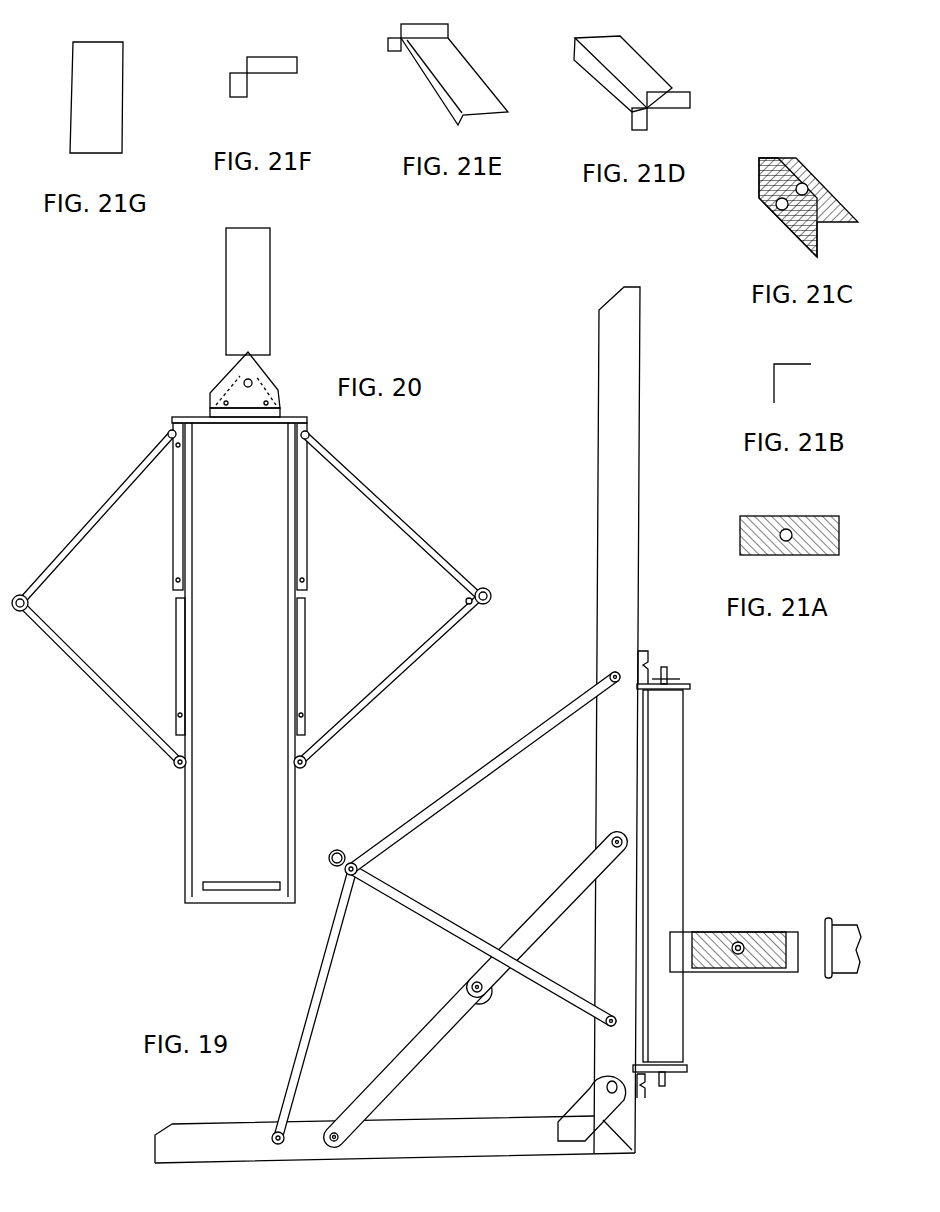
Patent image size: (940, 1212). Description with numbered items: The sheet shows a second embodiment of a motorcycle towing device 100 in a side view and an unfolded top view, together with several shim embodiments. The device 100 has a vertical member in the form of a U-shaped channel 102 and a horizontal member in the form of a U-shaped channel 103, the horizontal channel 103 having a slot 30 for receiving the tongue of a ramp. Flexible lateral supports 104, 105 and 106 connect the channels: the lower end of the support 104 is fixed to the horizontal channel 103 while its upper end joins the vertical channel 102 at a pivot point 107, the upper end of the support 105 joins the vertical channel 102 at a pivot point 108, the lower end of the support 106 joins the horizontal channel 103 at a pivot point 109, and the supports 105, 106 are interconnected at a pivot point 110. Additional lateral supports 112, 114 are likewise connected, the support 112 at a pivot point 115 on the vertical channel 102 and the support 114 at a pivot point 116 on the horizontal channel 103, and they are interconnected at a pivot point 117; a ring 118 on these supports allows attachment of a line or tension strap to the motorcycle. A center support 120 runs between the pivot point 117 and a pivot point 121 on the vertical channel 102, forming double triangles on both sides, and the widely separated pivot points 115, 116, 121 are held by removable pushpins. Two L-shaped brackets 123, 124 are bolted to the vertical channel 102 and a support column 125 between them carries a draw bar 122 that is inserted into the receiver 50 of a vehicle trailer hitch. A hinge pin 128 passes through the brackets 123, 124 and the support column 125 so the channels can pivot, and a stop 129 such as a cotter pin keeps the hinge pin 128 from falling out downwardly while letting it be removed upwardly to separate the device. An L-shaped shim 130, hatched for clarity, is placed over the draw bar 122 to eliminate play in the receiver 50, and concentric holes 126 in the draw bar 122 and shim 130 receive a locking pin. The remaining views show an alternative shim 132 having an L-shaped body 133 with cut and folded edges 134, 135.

In FIG. 20, the slot 30 is at (210, 913).
In FIG. 19, the receiver 50 is at (847, 967).
In FIG. 19, the motorcycle towing device 100 is at (563, 528).
In FIG. 20, the vertical channel 102 is at (192, 420).
In FIG. 19, the vertical channel 102 is at (628, 498).
In FIG. 20, the horizontal channel 103 is at (207, 840).
In FIG. 19, the horizontal channel 103 is at (183, 1137).
In FIG. 19, the lateral support 104 is at (593, 1107).
In FIG. 20, the lateral support 105 is at (175, 527).
In FIG. 19, the lateral support 105 is at (552, 897).
In FIG. 20, the lateral support 106 is at (183, 643).
In FIG. 19, the lateral support 106 is at (413, 1047).
In FIG. 19, the pivot point 107 is at (612, 1077).
In FIG. 19, the pivot point 108 is at (612, 826).
In FIG. 19, the pivot point 109 is at (333, 1130).
In FIG. 19, the pivot point 110 is at (472, 977).
In FIG. 20, the lateral support 112 is at (367, 480).
In FIG. 19, the lateral support 112 is at (483, 765).
In FIG. 20, the lateral support 114 is at (367, 693).
In FIG. 19, the lateral support 114 is at (320, 963).
In FIG. 19, the pivot point 115 is at (610, 672).
In FIG. 19, the pivot point 116 is at (272, 1127).
In FIG. 19, the pivot point 117 is at (353, 860).
In FIG. 20, the ring 118 is at (490, 585).
In FIG. 19, the ring 118 is at (337, 850).
In FIG. 19, the center support 120 is at (412, 900).
In FIG. 19, the pivot point 121 is at (613, 1020).
In FIG. 20, the draw bar 122 is at (260, 287).
In FIG. 19, the draw bar 122 is at (682, 950).
In FIG. 20, the L-shaped bracket 123 is at (217, 383).
In FIG. 19, the L-shaped bracket 123 is at (648, 657).
In FIG. 19, the L-shaped bracket 124 is at (637, 1103).
In FIG. 20, the support column 125 is at (240, 357).
In FIG. 19, the support column 125 is at (673, 730).
In FIG. 19, the holes 126 is at (740, 968).
In FIG. 19, the hinge pin 128 is at (668, 663).
In FIG. 19, the stop 129 is at (690, 677).
In FIG. 21C, the L-shaped shim 130 is at (790, 230).
In FIG. 21B, the L-shaped shim 130 is at (772, 370).
In FIG. 21A, the L-shaped shim 130 is at (837, 530).
In FIG. 19, the L-shaped shim 130 is at (763, 927).
In FIG. 21D, the shim 132 is at (672, 62).
In FIG. 21G, the L-shaped body 133 is at (115, 77).
In FIG. 21E, the L-shaped body 133 is at (462, 72).
In FIG. 21D, the L-shaped body 133 is at (607, 47).
In FIG. 21F, the cut and folded edge 134 is at (290, 62).
In FIG. 21D, the cut and folded edge 134 is at (690, 97).
In FIG. 21F, the cut and folded edge 135 is at (240, 87).
In FIG. 21D, the cut and folded edge 135 is at (630, 115).